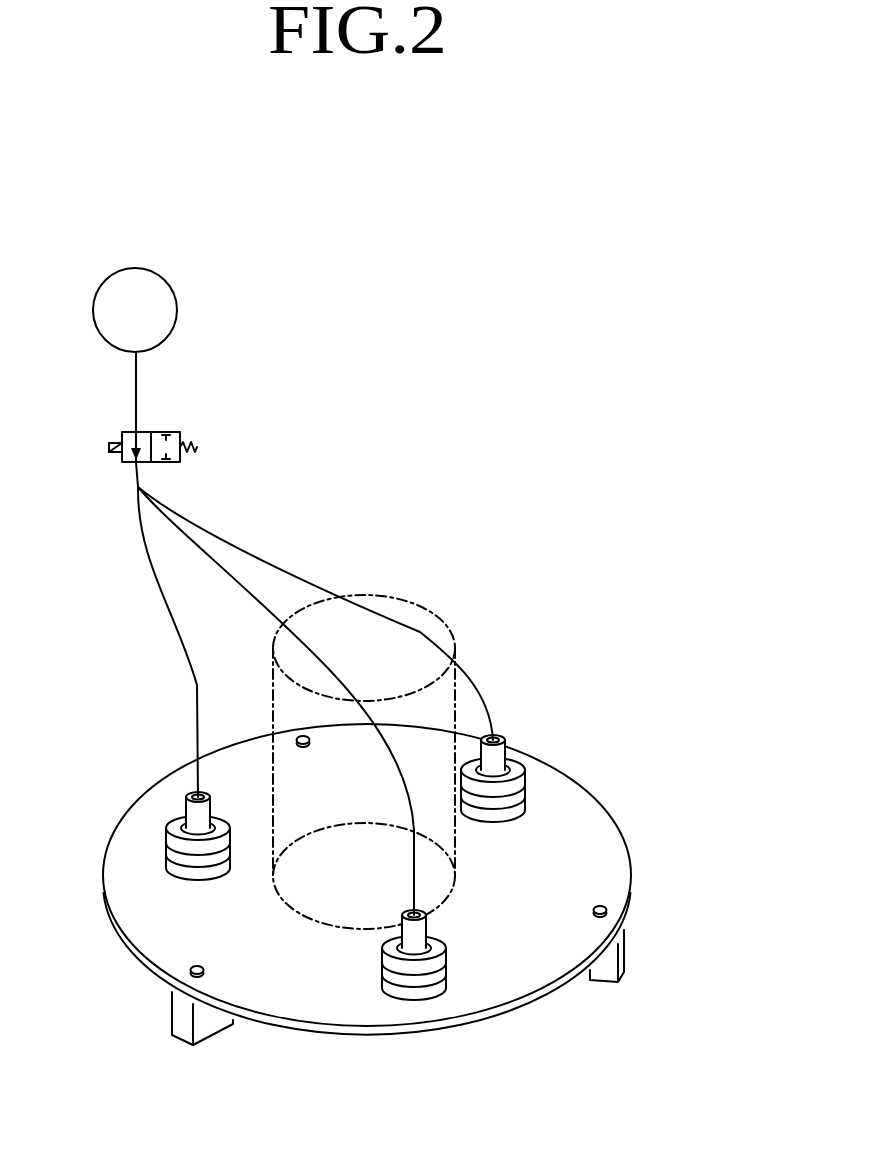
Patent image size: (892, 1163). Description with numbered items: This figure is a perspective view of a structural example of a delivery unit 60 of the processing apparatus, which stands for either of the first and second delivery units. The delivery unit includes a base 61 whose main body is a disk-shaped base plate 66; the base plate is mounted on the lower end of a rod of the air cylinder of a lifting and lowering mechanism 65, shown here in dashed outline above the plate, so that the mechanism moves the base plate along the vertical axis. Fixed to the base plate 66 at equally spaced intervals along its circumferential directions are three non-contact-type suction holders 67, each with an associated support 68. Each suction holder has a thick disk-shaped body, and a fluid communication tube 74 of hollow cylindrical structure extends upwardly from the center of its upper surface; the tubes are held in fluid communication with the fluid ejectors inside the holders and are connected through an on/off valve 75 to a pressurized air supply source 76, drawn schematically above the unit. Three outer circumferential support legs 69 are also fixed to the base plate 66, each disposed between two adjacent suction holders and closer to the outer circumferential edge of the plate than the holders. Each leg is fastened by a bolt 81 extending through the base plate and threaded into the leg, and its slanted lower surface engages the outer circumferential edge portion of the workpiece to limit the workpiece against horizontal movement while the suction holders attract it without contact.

The delivery unit 60 is at (603, 487).
The base 61 is at (627, 842).
The lifting and lowering mechanism 65 is at (430, 601).
The base plate 66 is at (550, 996).
The non-contact-type suction holder 67 is at (190, 883).
The support 68 is at (166, 824).
The outer circumferential support leg 69 is at (183, 1045).
The fluid communication tube 74 is at (190, 813).
The on/off valve 75 is at (177, 432).
The pressurized air supply source 76 is at (177, 296).
The bolt 81 is at (298, 736).